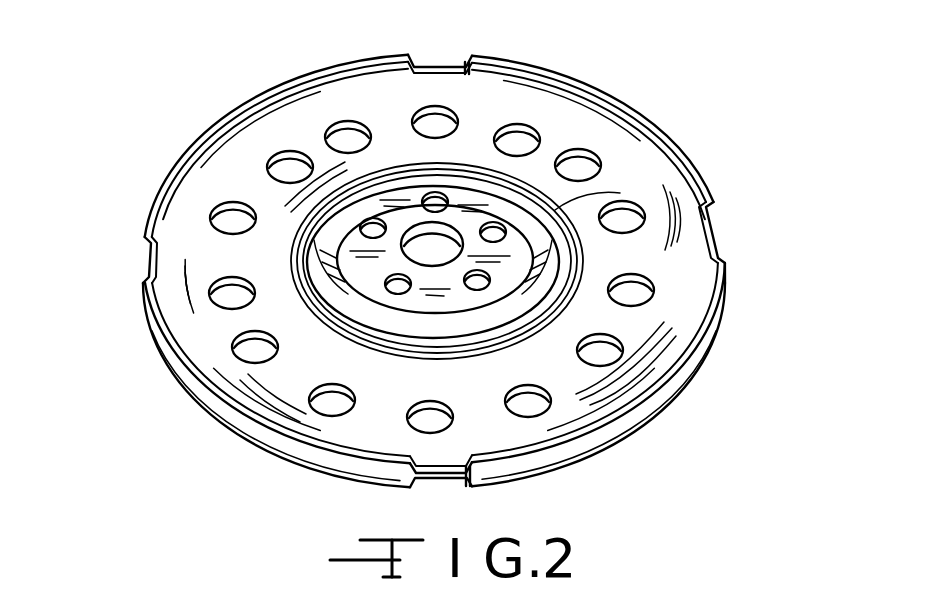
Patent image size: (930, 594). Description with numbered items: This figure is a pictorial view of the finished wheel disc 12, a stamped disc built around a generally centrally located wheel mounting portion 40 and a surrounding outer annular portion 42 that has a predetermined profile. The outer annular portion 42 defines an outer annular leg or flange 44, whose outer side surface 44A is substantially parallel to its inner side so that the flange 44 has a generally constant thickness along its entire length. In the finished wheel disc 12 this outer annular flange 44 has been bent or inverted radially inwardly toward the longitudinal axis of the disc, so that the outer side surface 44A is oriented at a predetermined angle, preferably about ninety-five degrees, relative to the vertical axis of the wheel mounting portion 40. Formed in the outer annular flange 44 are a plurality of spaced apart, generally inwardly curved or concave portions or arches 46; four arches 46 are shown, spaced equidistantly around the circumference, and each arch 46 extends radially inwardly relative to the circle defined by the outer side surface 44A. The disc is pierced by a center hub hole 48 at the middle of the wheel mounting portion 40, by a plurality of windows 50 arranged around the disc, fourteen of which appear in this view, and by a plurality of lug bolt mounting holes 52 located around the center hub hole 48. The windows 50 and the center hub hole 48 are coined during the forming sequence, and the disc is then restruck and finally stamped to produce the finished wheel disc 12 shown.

The finished wheel disc 12 is at (678, 118).
The wheel mounting portion 40 is at (513, 268).
The outer annular portion 42 is at (690, 298).
The outer annular flange 44 is at (642, 420).
The outer side surface 44A is at (234, 414).
The arches 46 is at (446, 63).
The center hub hole 48 is at (432, 244).
The windows 50 is at (341, 130).
The lug bolt mounting holes 52 is at (374, 220).